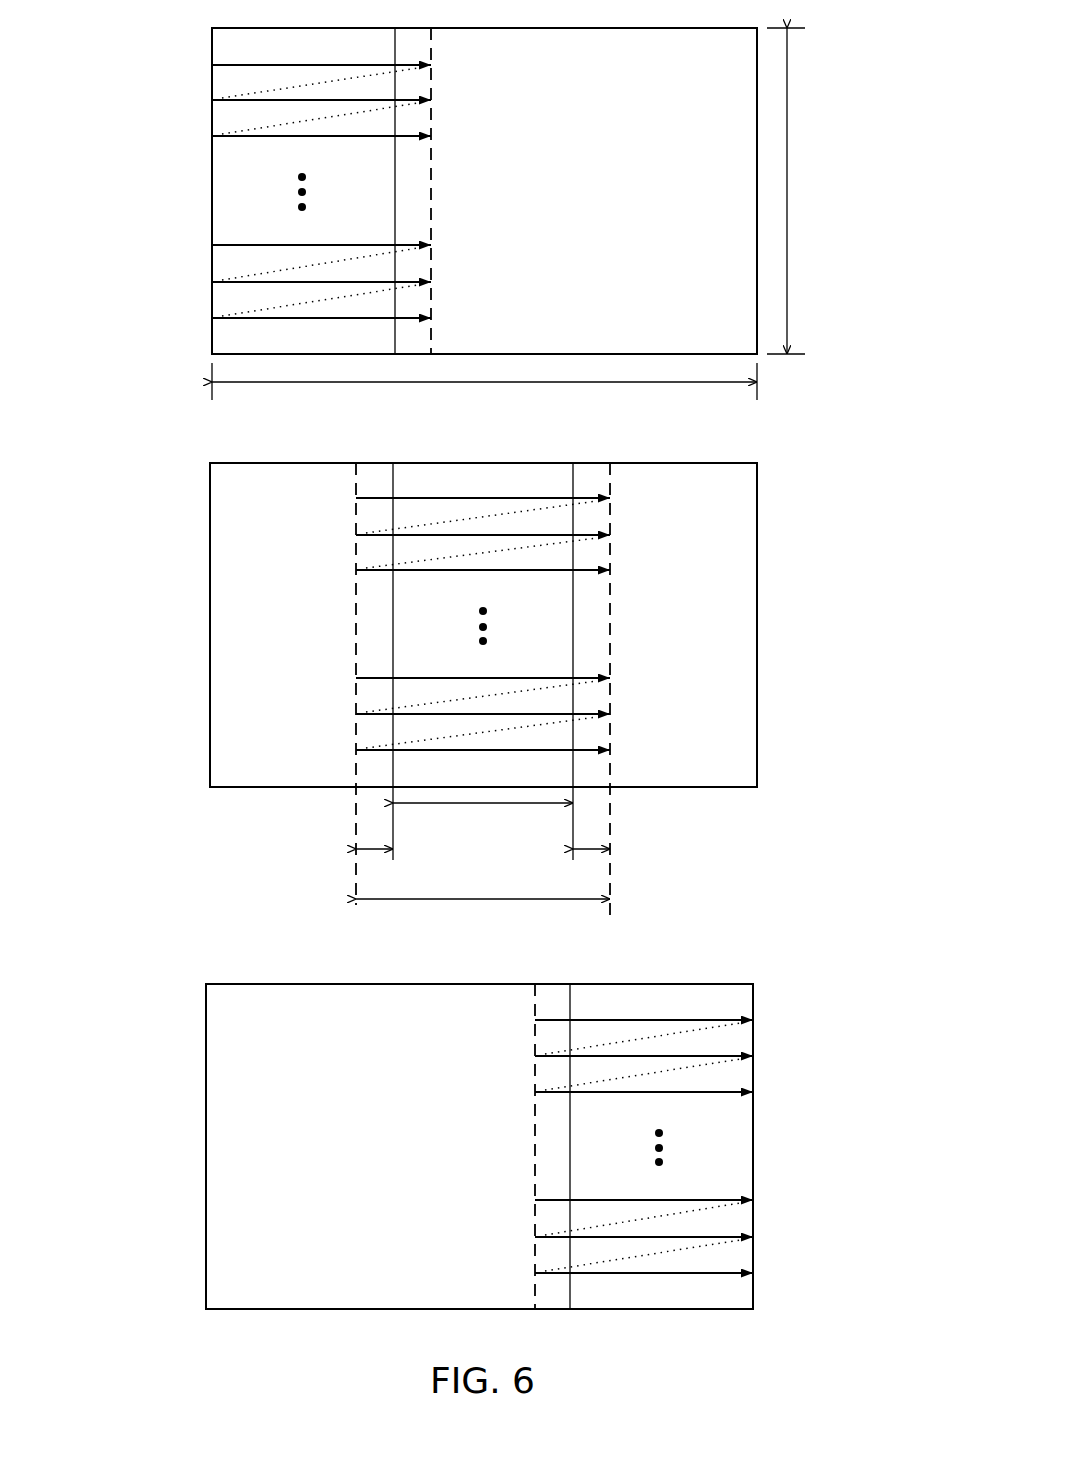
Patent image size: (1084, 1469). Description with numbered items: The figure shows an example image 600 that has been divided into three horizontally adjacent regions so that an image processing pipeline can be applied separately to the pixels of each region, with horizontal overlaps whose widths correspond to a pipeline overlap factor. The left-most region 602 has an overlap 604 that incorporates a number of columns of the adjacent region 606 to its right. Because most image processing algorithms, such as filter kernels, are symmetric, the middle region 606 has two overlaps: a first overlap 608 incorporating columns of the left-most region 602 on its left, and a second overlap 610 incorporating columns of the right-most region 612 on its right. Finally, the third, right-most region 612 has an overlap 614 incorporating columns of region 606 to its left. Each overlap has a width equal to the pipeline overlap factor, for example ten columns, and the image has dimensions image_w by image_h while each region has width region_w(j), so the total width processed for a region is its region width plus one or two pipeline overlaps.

The example image 600 is at (105, 1332).
The left-most region 602 is at (323, 347).
The overlap 604 is at (413, 171).
The adjacent region 606 is at (505, 779).
The first overlap 608 is at (376, 631).
The second overlap 610 is at (590, 633).
The right-most region 612 is at (683, 1302).
The overlap 614 is at (553, 1160).